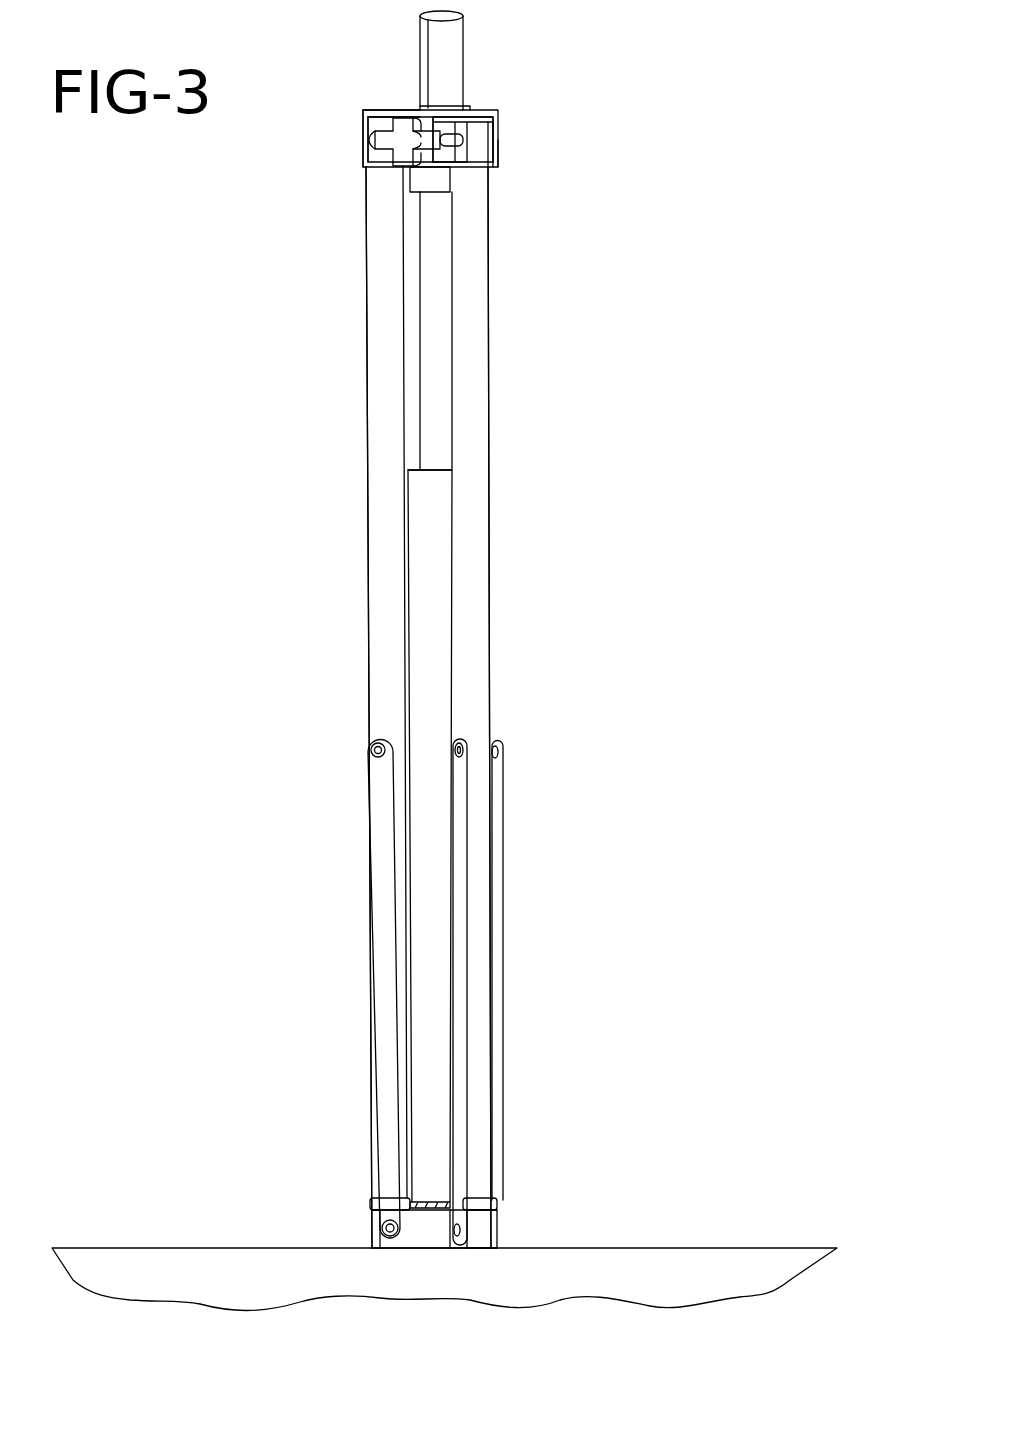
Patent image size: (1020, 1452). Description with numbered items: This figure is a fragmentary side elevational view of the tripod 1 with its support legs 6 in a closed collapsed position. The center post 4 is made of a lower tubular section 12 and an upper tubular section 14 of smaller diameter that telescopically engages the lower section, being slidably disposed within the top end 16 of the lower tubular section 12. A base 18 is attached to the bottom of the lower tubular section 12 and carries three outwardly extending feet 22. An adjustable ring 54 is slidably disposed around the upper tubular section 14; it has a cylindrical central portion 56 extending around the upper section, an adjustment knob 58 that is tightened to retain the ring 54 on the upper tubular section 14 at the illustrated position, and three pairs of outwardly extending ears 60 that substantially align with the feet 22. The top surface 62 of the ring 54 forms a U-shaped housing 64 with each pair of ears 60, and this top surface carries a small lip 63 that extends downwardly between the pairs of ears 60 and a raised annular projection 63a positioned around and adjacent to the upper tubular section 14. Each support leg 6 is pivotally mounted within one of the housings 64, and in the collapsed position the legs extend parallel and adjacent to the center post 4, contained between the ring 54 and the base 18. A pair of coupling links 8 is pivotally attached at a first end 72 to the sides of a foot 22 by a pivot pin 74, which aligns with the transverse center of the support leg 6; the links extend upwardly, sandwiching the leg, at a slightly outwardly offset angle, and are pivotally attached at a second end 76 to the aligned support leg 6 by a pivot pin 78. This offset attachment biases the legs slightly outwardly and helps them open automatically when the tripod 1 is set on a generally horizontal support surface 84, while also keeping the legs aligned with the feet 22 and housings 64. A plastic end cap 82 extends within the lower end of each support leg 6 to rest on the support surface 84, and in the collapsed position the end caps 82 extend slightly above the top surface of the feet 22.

The tripod 1 is at (640, 345).
The center post 4 is at (480, 30).
The support legs 6 is at (352, 290).
The coupling links 8 is at (439, 972).
The lower tubular section 12 is at (428, 598).
The upper tubular section 14 is at (430, 40).
The top end 16 is at (438, 470).
The base 18 is at (504, 1215).
The feet 22 is at (483, 1237).
The adjustable ring 54 is at (520, 100).
The cylindrical central portion 56 is at (440, 193).
The adjustment knob 58 is at (403, 145).
The ears 60 is at (350, 152).
The top surface 62 is at (378, 112).
The lip 63 is at (475, 117).
The raised annular projection 63a is at (470, 103).
The U-shaped housing 64 is at (363, 117).
The first end 72 is at (388, 1193).
The pivot pin 74 is at (387, 1228).
The second end 76 is at (378, 773).
The pivot pin 78 is at (458, 748).
The plastic end cap 82 is at (478, 1197).
The support surface 84 is at (710, 1248).